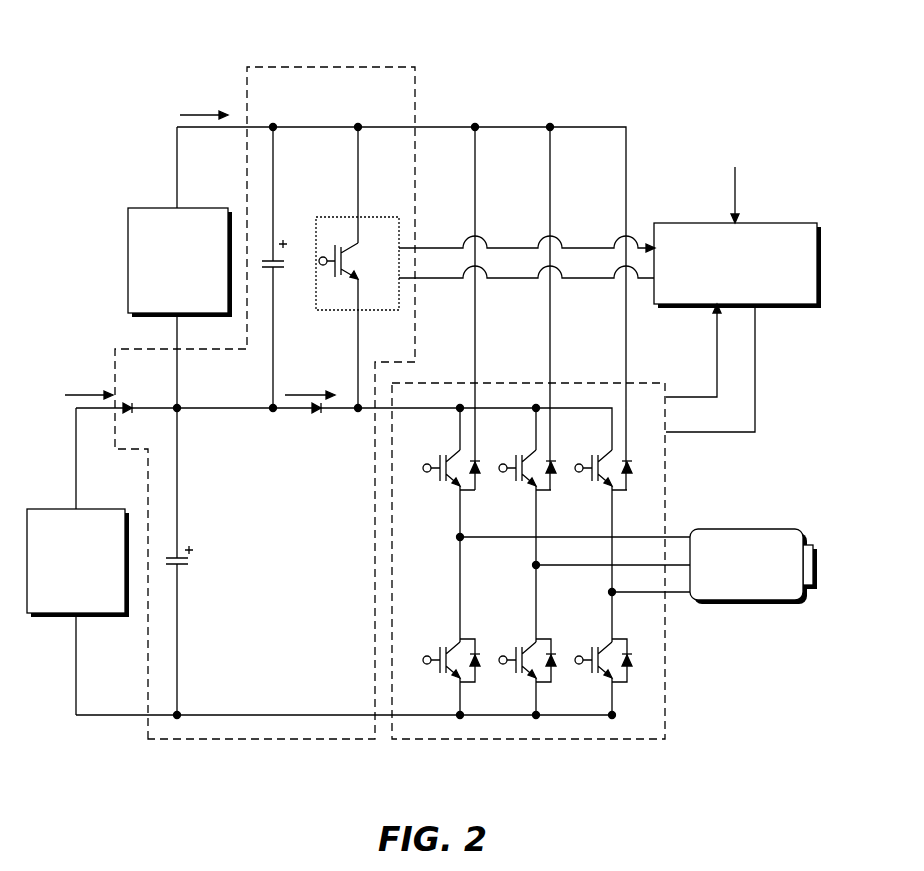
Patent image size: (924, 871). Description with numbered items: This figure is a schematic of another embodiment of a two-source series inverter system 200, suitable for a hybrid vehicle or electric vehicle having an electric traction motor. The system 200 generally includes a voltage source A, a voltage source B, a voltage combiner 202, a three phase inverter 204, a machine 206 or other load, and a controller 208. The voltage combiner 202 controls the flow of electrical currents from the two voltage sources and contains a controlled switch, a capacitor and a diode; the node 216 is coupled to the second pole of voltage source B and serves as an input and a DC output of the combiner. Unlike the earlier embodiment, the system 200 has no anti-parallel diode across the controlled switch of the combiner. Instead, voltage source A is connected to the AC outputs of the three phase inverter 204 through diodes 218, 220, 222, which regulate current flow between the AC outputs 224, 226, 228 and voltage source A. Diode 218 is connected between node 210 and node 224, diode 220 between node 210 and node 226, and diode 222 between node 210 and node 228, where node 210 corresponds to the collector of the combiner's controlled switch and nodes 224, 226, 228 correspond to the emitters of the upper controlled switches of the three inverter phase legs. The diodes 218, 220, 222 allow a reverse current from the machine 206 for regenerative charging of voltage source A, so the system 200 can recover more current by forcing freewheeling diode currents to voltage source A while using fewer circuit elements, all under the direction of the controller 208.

The two-source series inverter system 200 is at (618, 42).
The voltage combiner 202 is at (335, 740).
The three phase inverter 204 is at (610, 740).
The machine 206 is at (738, 529).
The controller 208 is at (773, 223).
The node 210 is at (358, 125).
The node 216 is at (358, 406).
The diode 218 is at (478, 472).
The diode 220 is at (554, 472).
The diode 222 is at (630, 472).
The AC output node 224 is at (460, 537).
The AC output node 226 is at (536, 565).
The AC output node 228 is at (612, 592).